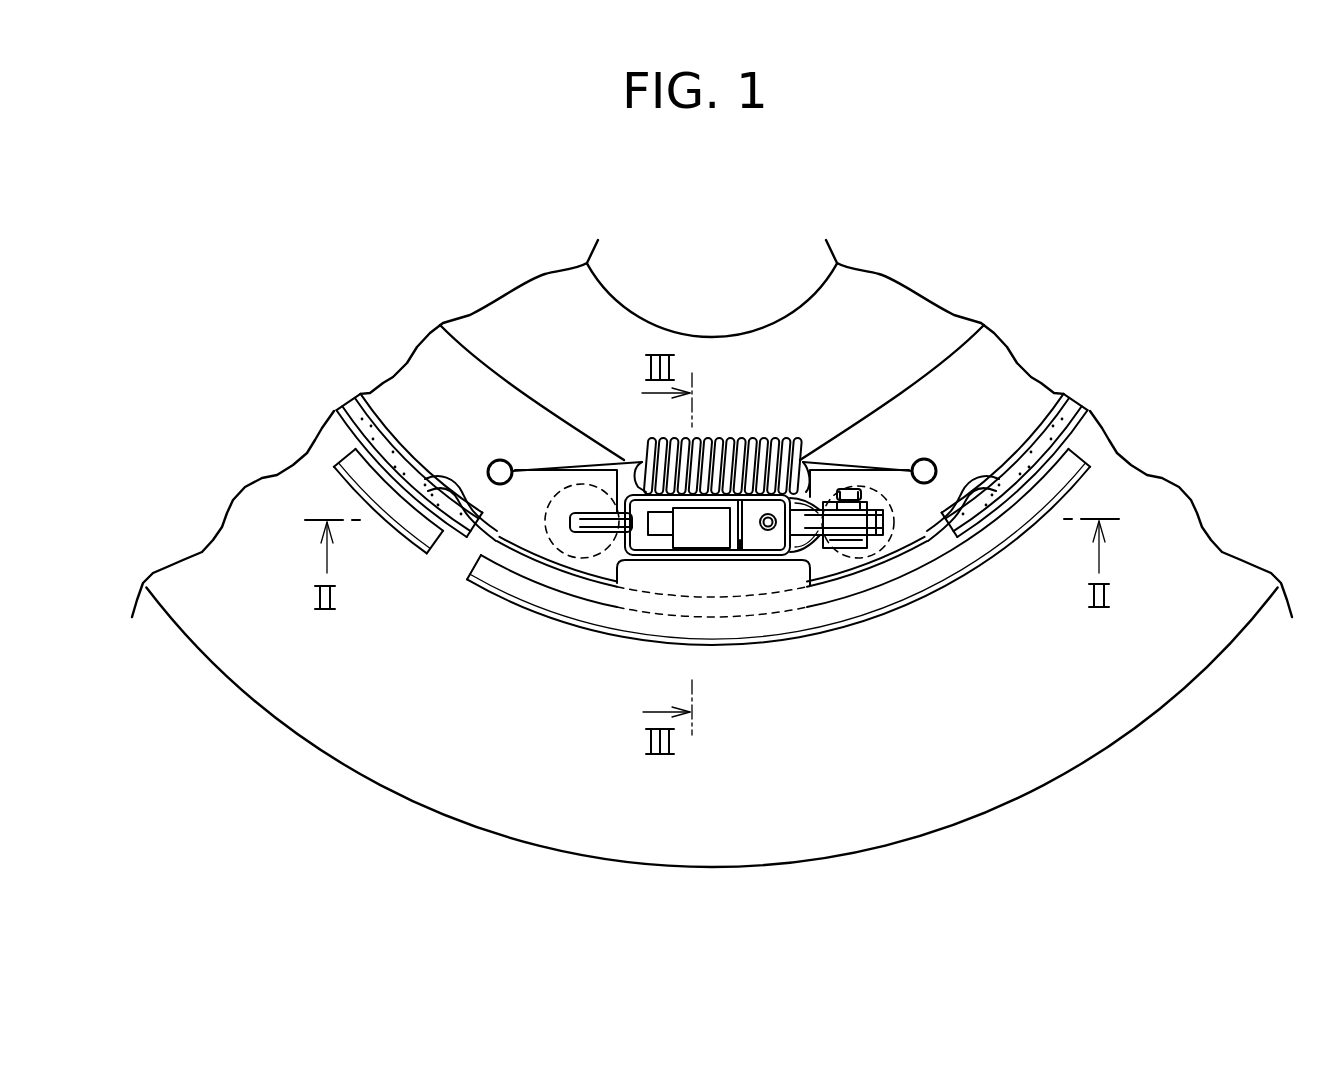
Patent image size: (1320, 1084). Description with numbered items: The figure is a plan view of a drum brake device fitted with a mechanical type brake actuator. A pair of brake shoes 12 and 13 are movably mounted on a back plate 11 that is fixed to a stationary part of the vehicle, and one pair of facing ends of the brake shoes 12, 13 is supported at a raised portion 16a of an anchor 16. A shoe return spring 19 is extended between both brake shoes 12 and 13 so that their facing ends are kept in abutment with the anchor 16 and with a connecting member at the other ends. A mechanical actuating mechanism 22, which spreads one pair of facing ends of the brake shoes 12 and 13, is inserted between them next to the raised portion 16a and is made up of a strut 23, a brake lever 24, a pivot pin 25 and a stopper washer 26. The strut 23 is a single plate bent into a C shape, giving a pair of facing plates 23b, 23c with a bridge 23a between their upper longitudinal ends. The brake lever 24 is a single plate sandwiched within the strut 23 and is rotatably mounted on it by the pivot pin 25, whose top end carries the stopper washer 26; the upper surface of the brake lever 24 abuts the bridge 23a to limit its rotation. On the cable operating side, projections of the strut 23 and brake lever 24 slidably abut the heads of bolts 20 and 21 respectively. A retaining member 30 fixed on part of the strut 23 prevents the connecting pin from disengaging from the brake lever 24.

The back plate 11 is at (323, 710).
The brake shoe 12 is at (298, 543).
The brake shoe 13 is at (1090, 467).
The anchor 16 is at (712, 693).
The raised portion 16a is at (819, 728).
The shoe return spring 19 is at (723, 376).
The bolt 20 is at (514, 700).
The bolt 21 is at (914, 553).
The mechanical actuating mechanism 22 is at (778, 683).
The strut 23 is at (820, 348).
The bridge 23a is at (905, 670).
The spring bent portion 23b is at (565, 736).
The second facing plate 23c is at (574, 352).
The brake lever 24 is at (874, 582).
The pivot pin 25 is at (807, 380).
The stopper washer 26 is at (911, 379).
The retaining member 30 is at (713, 737).